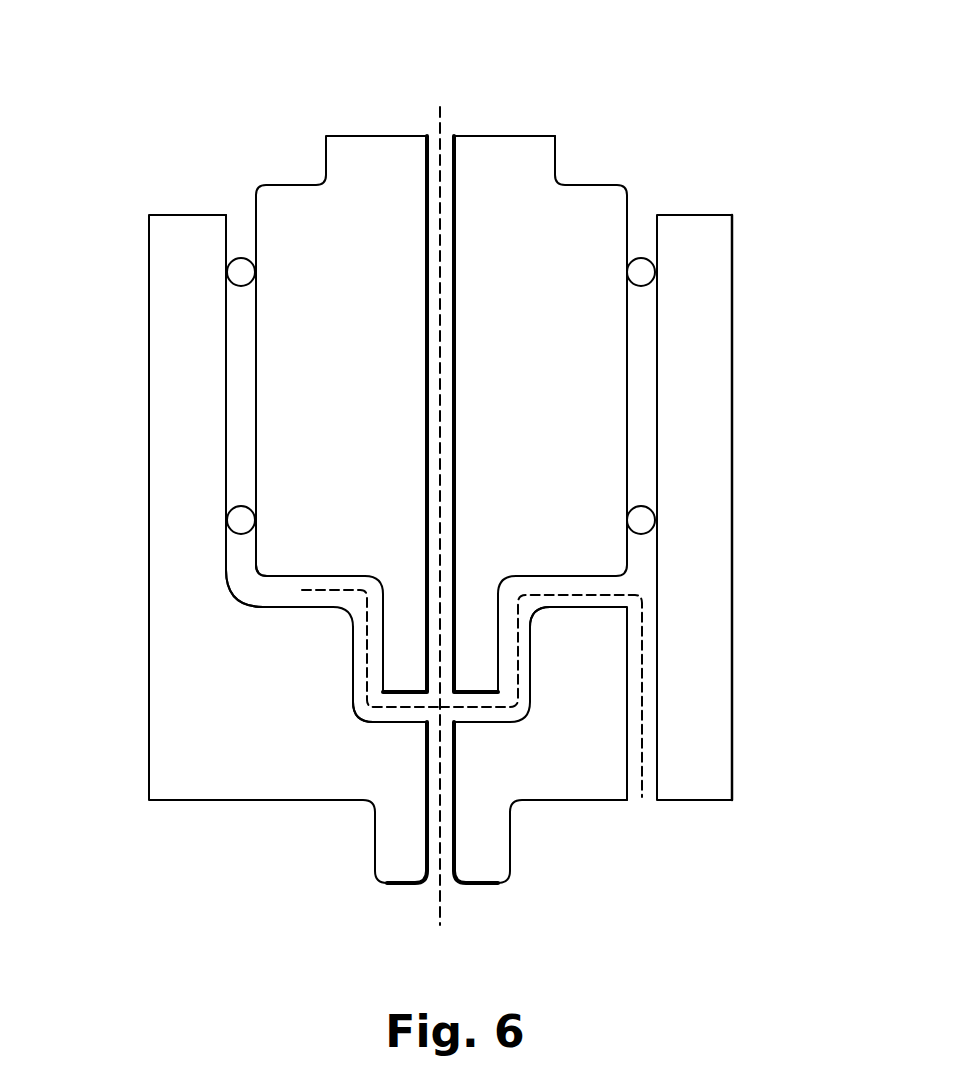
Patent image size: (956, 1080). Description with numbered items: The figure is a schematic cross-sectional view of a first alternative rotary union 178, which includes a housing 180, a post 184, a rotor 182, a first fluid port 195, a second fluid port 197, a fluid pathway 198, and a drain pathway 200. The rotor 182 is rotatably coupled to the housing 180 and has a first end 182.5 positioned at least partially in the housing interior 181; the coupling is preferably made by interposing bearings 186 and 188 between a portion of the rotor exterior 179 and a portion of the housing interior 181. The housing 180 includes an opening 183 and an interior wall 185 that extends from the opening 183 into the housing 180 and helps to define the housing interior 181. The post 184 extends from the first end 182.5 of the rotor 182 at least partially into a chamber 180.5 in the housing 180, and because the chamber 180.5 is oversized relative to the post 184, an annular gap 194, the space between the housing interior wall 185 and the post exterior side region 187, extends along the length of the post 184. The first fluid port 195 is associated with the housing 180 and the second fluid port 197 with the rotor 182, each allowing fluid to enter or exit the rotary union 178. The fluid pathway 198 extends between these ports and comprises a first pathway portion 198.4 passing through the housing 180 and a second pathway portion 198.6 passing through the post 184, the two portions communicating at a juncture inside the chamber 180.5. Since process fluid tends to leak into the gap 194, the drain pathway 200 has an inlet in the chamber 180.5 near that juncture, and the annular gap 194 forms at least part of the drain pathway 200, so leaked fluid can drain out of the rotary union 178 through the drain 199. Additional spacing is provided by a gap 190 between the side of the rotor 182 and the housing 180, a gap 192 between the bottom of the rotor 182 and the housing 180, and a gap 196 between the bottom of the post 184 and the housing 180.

The rotary union 178 is at (677, 73).
The rotor exterior 179 is at (256, 210).
The housing 180 is at (170, 415).
The chamber 180.5 is at (530, 708).
The housing interior 181 is at (235, 353).
The rotor 182 is at (580, 188).
The first end 182.5 is at (273, 548).
The opening 183 is at (527, 618).
The post 184 is at (480, 673).
The interior wall 185 is at (350, 648).
The bearing 186 is at (645, 272).
The post exterior side region 187 is at (502, 662).
The bearing 188 is at (647, 515).
The gap 190 is at (645, 368).
The gap 192 is at (243, 580).
The annular gap 194 is at (363, 678).
The first fluid port 195 is at (447, 875).
The gap 196 is at (400, 713).
The second fluid port 197 is at (454, 136).
The fluid pathway 198 is at (440, 515).
The first pathway portion 198.4 is at (457, 825).
The second pathway portion 198.6 is at (454, 587).
The drain 199 is at (648, 765).
The drain pathway 200 is at (302, 590).